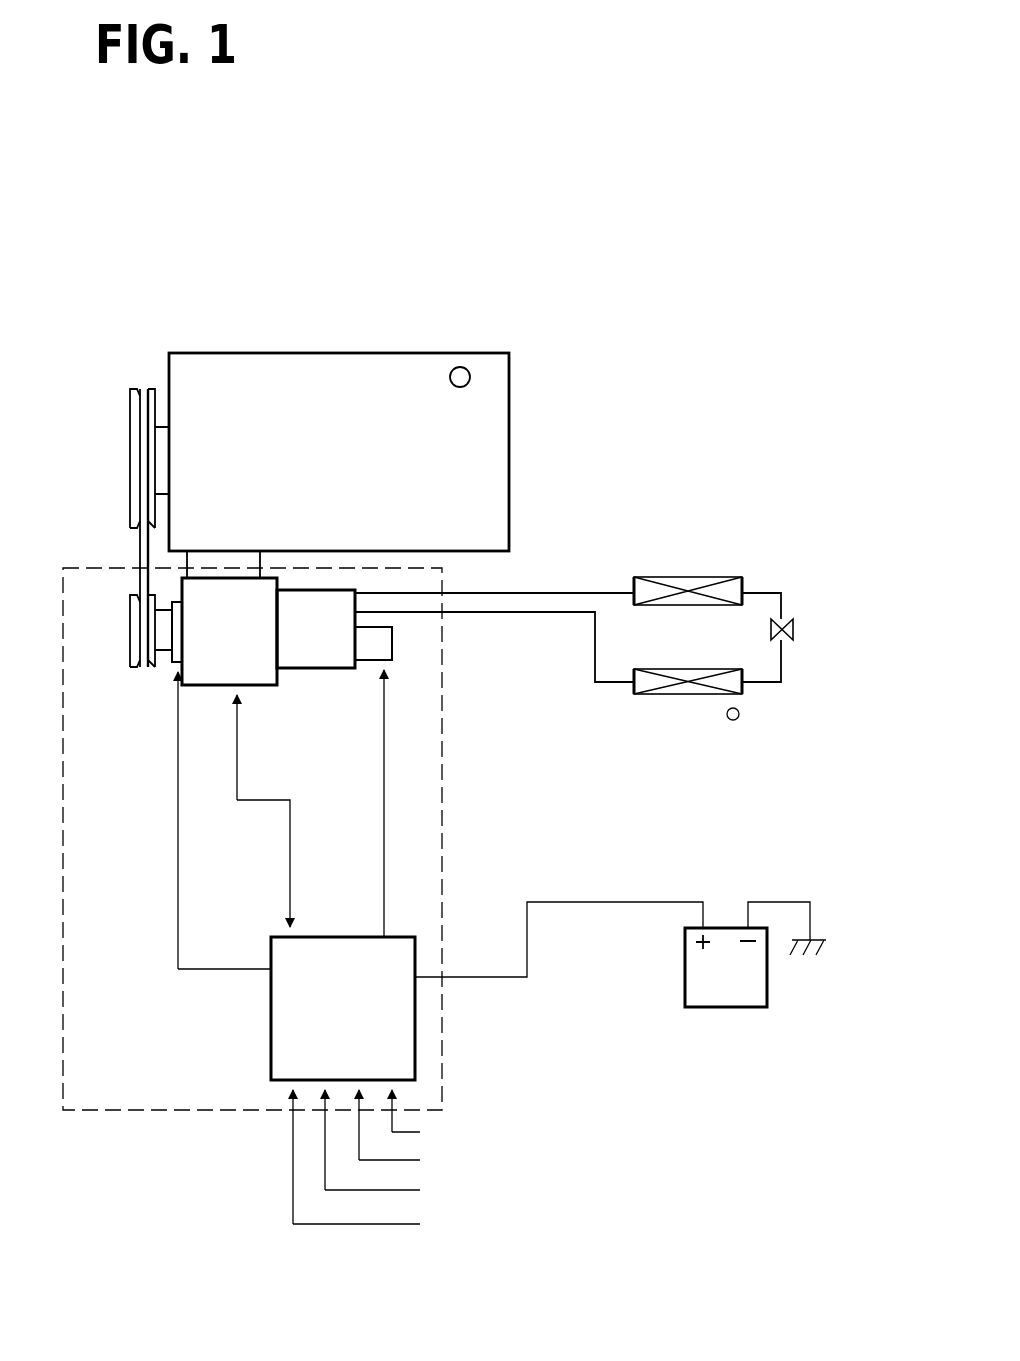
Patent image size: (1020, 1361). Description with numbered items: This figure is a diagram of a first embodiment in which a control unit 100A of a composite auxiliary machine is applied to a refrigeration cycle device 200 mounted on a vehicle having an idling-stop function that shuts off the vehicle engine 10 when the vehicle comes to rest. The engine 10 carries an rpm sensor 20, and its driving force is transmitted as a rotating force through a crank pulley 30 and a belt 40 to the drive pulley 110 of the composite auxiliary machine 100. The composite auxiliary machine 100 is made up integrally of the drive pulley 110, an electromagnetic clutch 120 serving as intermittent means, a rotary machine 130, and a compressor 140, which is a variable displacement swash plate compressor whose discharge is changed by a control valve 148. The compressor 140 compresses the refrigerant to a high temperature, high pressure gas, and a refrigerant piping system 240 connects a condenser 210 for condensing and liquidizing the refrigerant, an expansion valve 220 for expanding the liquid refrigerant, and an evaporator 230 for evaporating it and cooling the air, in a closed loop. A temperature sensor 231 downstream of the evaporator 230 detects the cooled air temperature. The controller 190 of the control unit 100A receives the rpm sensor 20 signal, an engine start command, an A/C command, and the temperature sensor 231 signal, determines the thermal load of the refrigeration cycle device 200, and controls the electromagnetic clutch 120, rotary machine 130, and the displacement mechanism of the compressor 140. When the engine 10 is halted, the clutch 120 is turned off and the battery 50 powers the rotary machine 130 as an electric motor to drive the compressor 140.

The vehicle engine 10 is at (364, 373).
The rpm sensor 20 is at (459, 367).
The crank pulley 30 is at (128, 418).
The belt 40 is at (140, 556).
The battery 50 is at (722, 992).
The composite auxiliary machine 100 is at (273, 678).
The control unit 100A is at (442, 840).
The drive pulley 110 is at (132, 672).
The electromagnetic clutch 120 is at (181, 655).
The rotary machine 130 is at (252, 665).
The compressor 140 is at (308, 657).
The control valve 148 is at (383, 640).
The controller 190 is at (268, 1033).
The refrigeration cycle device 200 is at (612, 623).
The condenser 210 is at (680, 590).
The expansion valve 220 is at (795, 630).
The evaporator 230 is at (663, 694).
The temperature sensor 231 is at (733, 720).
The refrigerant piping system 240 is at (560, 590).